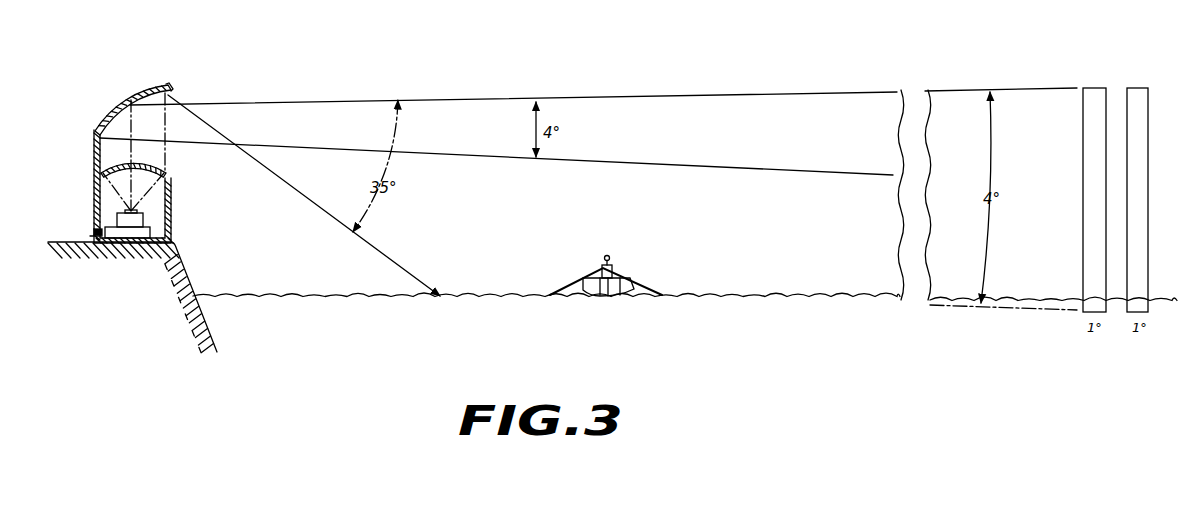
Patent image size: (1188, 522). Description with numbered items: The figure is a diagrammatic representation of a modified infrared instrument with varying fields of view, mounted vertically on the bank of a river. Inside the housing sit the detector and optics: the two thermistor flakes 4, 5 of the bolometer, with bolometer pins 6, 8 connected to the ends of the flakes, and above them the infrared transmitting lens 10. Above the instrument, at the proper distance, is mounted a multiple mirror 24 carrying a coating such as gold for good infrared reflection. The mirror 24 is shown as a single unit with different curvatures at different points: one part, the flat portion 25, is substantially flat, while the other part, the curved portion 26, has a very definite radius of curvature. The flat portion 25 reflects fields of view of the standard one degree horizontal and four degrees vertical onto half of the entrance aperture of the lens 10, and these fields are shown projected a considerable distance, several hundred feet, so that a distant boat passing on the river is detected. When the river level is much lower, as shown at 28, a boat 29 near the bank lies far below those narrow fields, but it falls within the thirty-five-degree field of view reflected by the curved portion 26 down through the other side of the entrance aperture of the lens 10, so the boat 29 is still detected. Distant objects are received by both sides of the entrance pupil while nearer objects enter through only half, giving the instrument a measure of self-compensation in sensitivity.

The thermistor flake 4 is at (159, 217).
The thermistor flake 5 is at (137, 211).
The bolometer pin 6 is at (93, 231).
The bolometer pin 8 is at (95, 231).
The lens 10 is at (100, 173).
The multiple mirror 24 is at (123, 92).
The flat portion of the mirror 25 is at (103, 126).
The curved portion of the mirror 26 is at (156, 83).
The river level 28 is at (726, 295).
The boat 29 is at (620, 286).